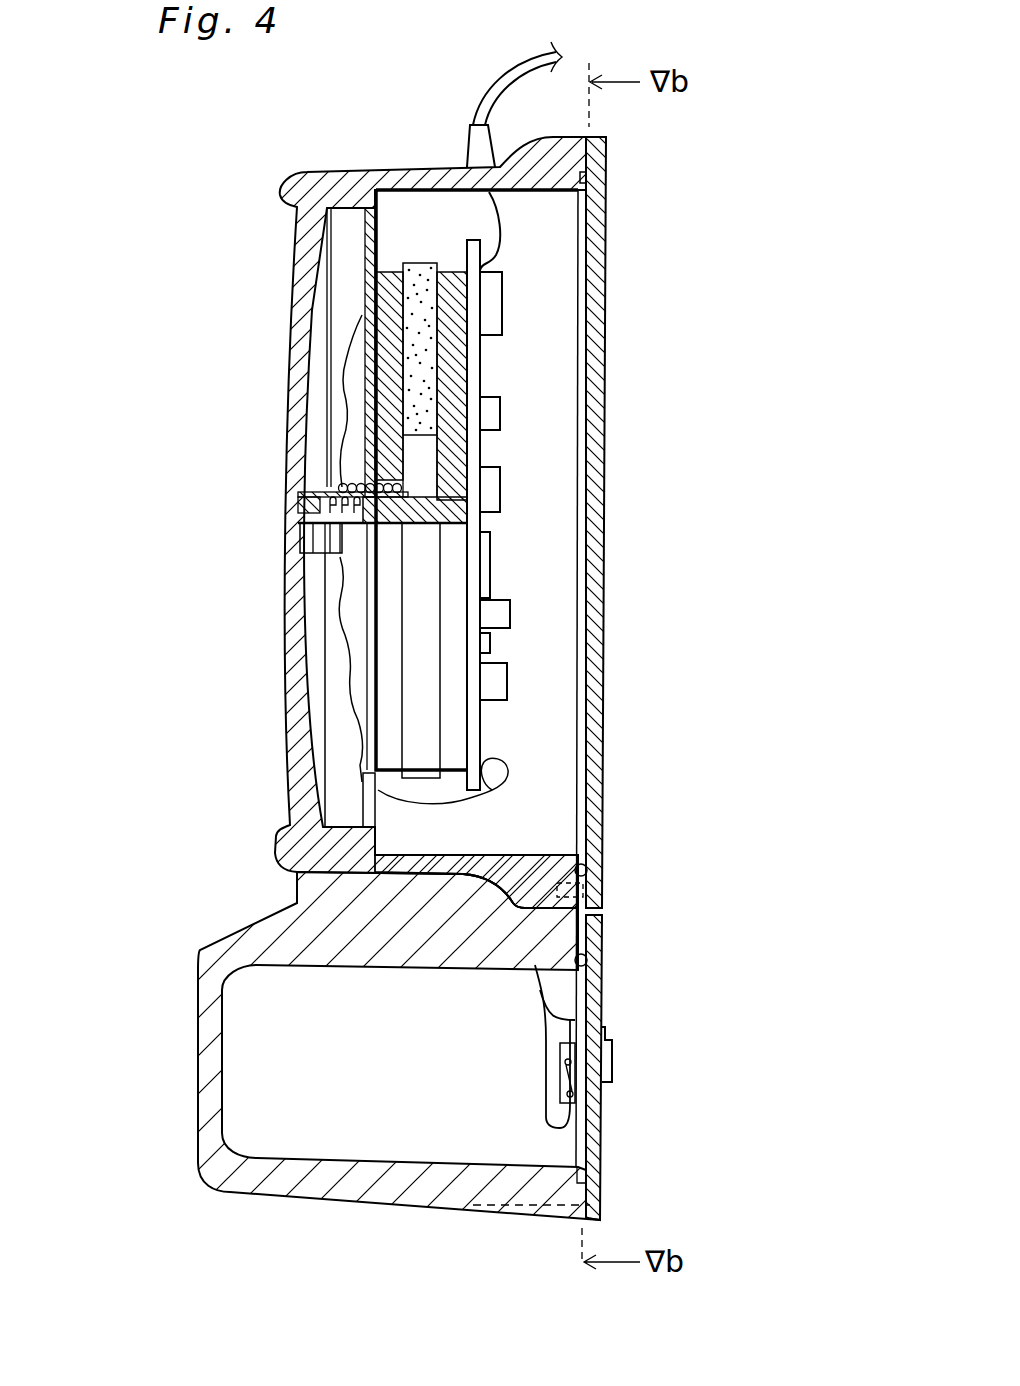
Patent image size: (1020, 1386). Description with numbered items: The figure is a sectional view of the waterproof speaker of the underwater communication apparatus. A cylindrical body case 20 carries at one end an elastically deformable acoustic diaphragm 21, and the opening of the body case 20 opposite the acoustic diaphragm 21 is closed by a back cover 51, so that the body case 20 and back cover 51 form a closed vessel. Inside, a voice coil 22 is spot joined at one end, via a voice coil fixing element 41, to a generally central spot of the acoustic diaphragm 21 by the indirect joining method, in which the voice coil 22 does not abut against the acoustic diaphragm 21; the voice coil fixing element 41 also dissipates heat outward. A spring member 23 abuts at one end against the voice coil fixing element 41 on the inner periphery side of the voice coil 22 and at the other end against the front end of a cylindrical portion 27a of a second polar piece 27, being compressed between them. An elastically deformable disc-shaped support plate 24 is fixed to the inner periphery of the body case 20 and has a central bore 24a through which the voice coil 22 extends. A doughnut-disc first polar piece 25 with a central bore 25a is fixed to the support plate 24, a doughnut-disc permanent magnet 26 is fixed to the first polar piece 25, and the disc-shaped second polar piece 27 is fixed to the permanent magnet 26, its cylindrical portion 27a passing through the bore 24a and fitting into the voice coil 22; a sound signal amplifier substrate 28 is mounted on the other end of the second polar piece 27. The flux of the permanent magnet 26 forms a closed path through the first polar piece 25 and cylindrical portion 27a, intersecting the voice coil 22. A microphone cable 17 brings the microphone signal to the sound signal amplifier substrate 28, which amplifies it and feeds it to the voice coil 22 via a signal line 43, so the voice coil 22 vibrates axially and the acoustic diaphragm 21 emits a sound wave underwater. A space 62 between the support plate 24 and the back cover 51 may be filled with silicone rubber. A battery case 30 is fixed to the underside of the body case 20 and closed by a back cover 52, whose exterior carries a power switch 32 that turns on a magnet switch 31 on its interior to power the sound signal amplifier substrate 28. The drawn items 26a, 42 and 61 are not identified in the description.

The microphone cable 17 is at (487, 85).
The body case 20 is at (417, 270).
The acoustic diaphragm 21 is at (295, 280).
The voice coil 22 is at (340, 460).
The spring member 23 is at (335, 490).
The support plate 24 is at (328, 208).
The bore 24a is at (413, 523).
The first polar piece 25 is at (380, 288).
The bore 25a is at (440, 484).
The permanent magnet 26 is at (397, 190).
The frame slot 26a is at (433, 448).
The second polar piece 27 is at (462, 308).
The cylindrical portion 27a is at (492, 550).
The sound signal amplifier substrate 28 is at (495, 365).
The battery case 30 is at (212, 1082).
The magnet switch 31 is at (560, 1078).
The power switch 32 is at (614, 1060).
The voice coil fixing element 41 is at (302, 520).
The lead wire 42 is at (347, 658).
The signal line 43 is at (487, 800).
The back cover 51 is at (593, 790).
The back cover 52 is at (592, 998).
The plate 61 is at (340, 735).
The space 62 is at (550, 700).